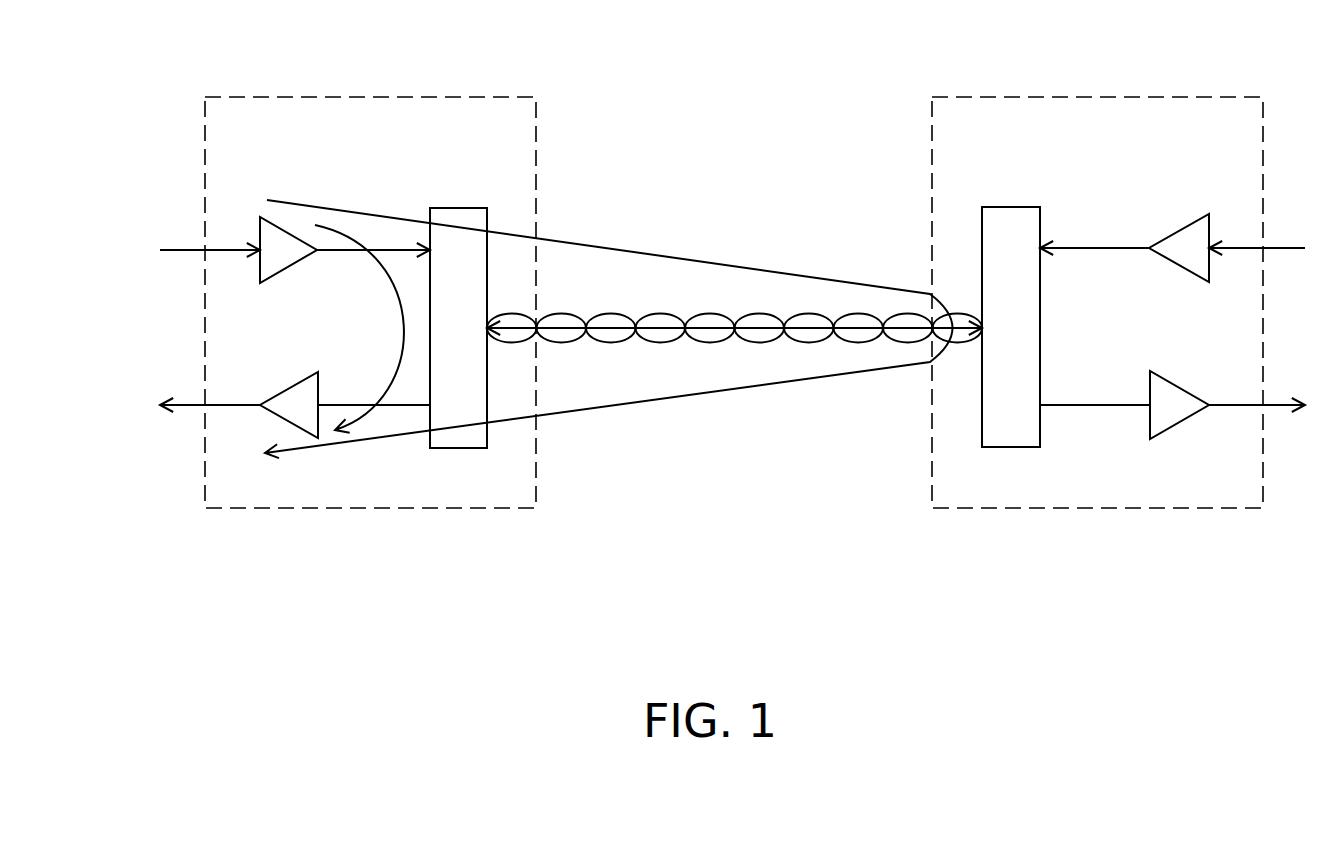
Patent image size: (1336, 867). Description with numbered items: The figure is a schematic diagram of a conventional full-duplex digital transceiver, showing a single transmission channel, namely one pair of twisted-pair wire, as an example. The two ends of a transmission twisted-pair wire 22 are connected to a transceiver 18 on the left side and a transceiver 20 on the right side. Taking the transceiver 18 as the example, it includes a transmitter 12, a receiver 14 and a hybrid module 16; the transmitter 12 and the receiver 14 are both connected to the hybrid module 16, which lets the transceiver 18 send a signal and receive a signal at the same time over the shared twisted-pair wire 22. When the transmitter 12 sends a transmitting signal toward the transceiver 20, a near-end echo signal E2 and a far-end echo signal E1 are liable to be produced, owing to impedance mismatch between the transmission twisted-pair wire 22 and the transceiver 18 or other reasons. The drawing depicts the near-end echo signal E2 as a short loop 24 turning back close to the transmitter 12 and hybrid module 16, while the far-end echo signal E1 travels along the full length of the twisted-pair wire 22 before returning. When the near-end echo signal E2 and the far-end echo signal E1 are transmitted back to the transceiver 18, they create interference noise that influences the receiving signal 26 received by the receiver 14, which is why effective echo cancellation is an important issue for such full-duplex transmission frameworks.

The transmitter 12 is at (287, 270).
The receiver 14 is at (305, 380).
The hybrid module 16 is at (460, 208).
The transceiver 18 is at (372, 97).
The transceiver 20 is at (1100, 97).
The transmission twisted-pair wire 22 is at (710, 330).
The near-end echo path 24 is at (388, 252).
The receiving signal 26 is at (408, 405).
The far-end echo signal E1 is at (700, 393).
The near-end echo signal E2 is at (363, 413).